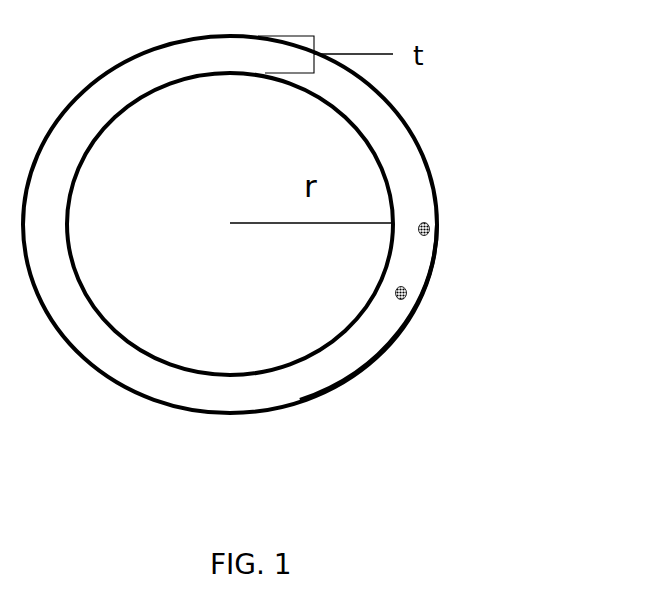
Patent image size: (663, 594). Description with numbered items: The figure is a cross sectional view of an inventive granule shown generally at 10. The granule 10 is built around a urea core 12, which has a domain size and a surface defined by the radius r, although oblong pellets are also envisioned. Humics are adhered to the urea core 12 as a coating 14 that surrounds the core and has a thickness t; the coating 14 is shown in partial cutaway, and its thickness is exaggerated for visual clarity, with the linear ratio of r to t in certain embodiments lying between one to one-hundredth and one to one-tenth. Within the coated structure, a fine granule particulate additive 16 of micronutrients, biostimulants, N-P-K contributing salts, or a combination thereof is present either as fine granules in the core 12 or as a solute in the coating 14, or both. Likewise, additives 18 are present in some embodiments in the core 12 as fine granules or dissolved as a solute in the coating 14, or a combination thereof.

The granule 10 is at (483, 140).
The urea core 12 is at (236, 308).
The coating 14 is at (425, 311).
The fine granule particulate additive 16 is at (438, 223).
The additives 18 is at (405, 290).